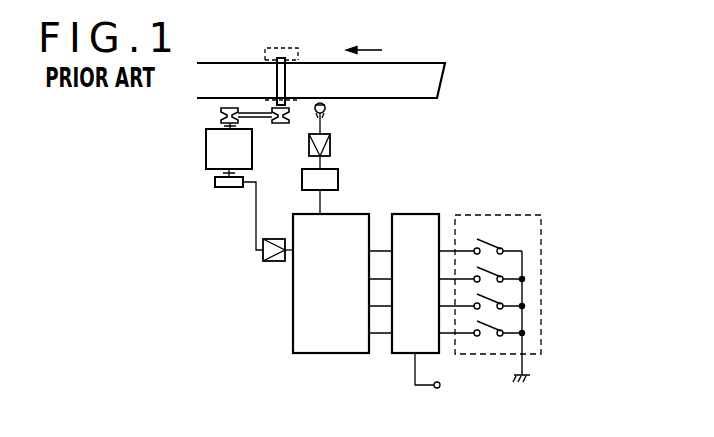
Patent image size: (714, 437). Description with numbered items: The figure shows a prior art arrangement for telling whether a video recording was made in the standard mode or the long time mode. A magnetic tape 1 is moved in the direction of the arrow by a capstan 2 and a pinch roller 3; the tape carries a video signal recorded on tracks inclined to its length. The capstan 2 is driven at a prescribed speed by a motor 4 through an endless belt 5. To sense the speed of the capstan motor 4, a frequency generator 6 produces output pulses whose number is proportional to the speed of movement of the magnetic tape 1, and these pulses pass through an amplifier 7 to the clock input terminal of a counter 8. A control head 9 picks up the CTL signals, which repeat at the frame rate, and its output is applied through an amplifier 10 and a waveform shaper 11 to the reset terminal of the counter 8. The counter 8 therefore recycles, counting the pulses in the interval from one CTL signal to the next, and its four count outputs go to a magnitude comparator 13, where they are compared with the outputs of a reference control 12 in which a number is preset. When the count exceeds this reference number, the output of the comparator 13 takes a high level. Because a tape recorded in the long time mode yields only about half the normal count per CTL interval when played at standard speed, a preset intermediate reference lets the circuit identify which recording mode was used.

The magnetic tape 1 is at (321, 54).
The capstan 2 is at (265, 56).
The pinch roller 3 is at (293, 54).
The motor 4 is at (210, 158).
The endless belt 5 is at (255, 143).
The frequency generator 6 is at (230, 213).
The amplifier 7 is at (273, 279).
The counter 8 is at (335, 304).
The control head 9 is at (357, 118).
The amplifier 10 is at (349, 148).
The waveform shaper 11 is at (345, 190).
The reference control 12 is at (490, 267).
The magnitude comparator 13 is at (427, 270).